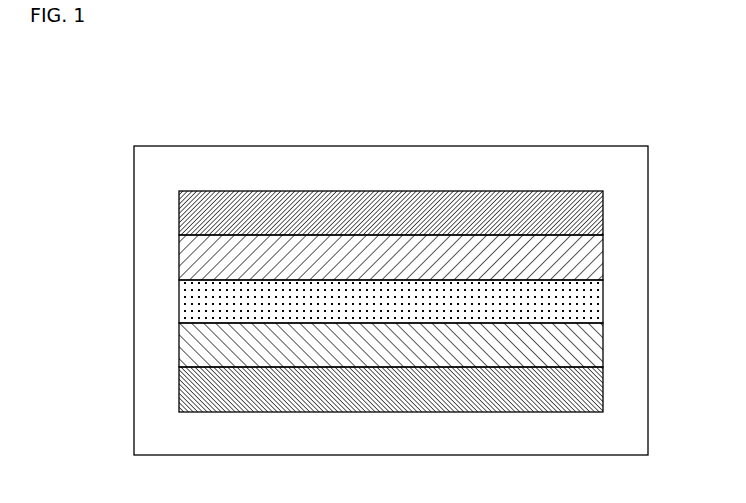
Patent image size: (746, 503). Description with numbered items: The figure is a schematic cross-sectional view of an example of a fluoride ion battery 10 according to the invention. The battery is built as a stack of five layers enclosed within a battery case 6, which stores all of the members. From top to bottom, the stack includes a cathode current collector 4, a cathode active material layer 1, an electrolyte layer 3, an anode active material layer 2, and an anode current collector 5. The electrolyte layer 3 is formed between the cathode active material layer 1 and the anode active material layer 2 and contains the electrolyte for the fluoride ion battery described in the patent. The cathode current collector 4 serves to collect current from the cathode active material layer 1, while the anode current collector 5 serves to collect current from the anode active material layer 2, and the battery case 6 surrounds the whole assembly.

The fluoride ion battery 10 is at (431, 264).
The battery case 6 is at (618, 175).
The cathode current collector 4 is at (578, 215).
The cathode active material layer 1 is at (577, 262).
The electrolyte layer 3 is at (577, 307).
The anode active material layer 2 is at (577, 352).
The anode current collector 5 is at (577, 395).